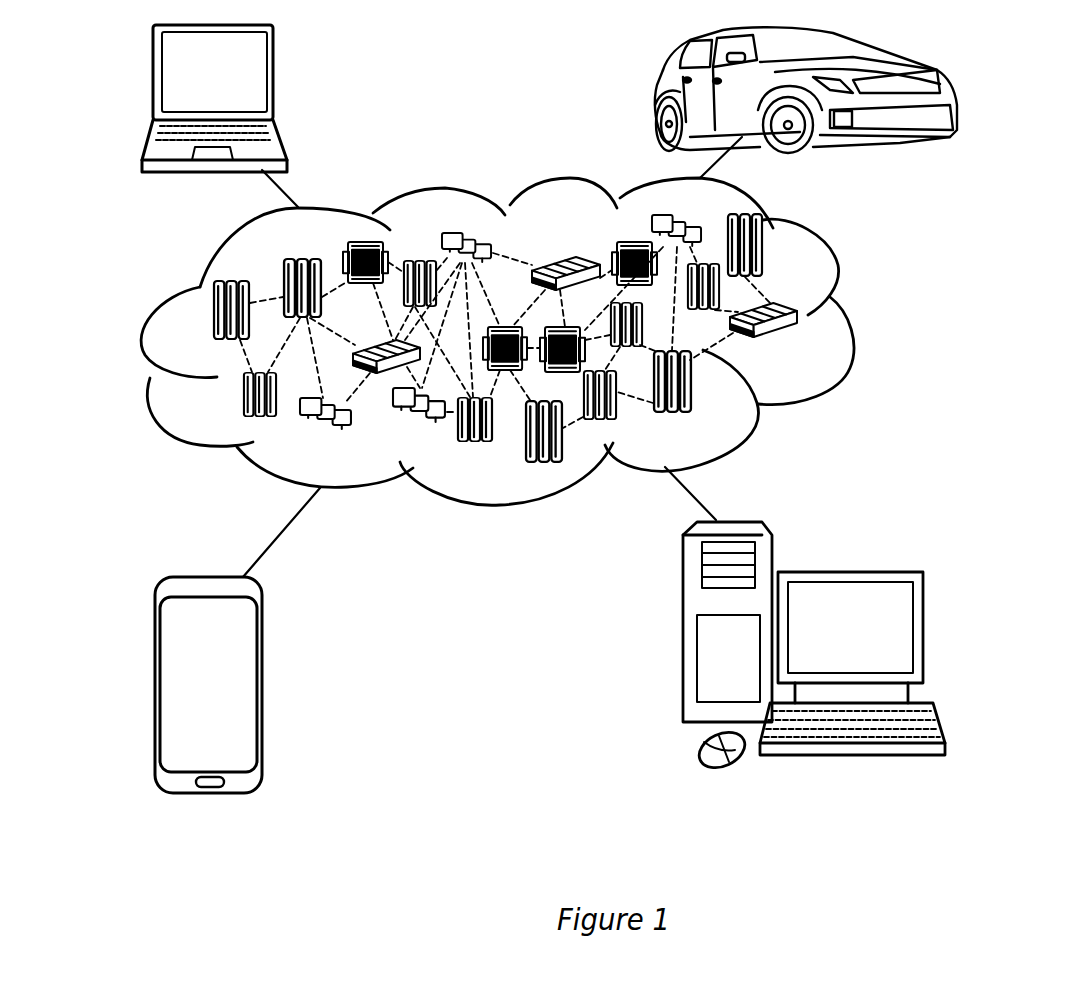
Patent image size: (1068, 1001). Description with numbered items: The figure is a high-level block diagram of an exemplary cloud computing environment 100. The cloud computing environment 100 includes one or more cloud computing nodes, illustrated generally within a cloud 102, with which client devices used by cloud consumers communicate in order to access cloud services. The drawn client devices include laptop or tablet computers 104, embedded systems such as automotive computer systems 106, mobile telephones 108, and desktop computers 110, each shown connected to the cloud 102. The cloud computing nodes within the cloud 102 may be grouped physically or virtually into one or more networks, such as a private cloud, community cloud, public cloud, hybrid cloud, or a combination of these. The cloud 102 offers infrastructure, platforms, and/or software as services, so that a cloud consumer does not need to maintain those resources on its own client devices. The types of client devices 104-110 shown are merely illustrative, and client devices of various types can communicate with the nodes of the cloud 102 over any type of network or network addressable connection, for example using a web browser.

The cloud computing environment 100 is at (990, 278).
The cloud 102 is at (848, 317).
The laptop or tablet computers 104 is at (273, 78).
The automotive computer systems 106 is at (653, 92).
The mobile telephones 108 is at (263, 655).
The desktop computers 110 is at (850, 571).